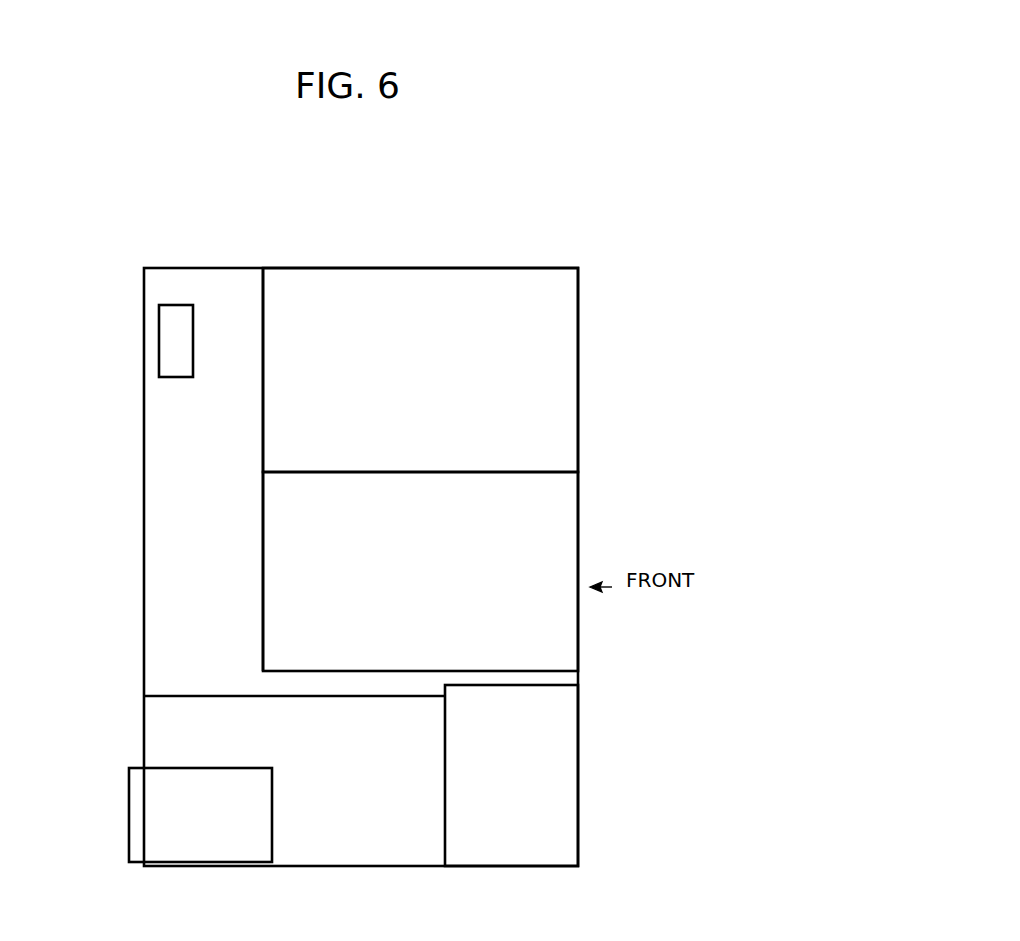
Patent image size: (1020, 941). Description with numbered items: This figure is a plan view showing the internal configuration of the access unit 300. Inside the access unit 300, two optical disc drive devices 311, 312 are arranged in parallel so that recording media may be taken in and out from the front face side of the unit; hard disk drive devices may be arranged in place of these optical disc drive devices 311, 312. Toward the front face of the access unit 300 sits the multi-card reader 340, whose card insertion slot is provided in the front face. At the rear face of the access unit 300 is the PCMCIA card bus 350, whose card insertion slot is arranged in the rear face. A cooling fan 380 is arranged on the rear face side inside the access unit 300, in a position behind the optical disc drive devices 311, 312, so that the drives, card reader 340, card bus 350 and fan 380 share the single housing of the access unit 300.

The access unit 300 is at (371, 238).
The optical disc drive device 311 is at (561, 378).
The optical disc drive device 312 is at (561, 516).
The multi-card reader 340 is at (562, 786).
The PCMCIA card bus 350 is at (145, 807).
The cooling fan 380 is at (163, 343).